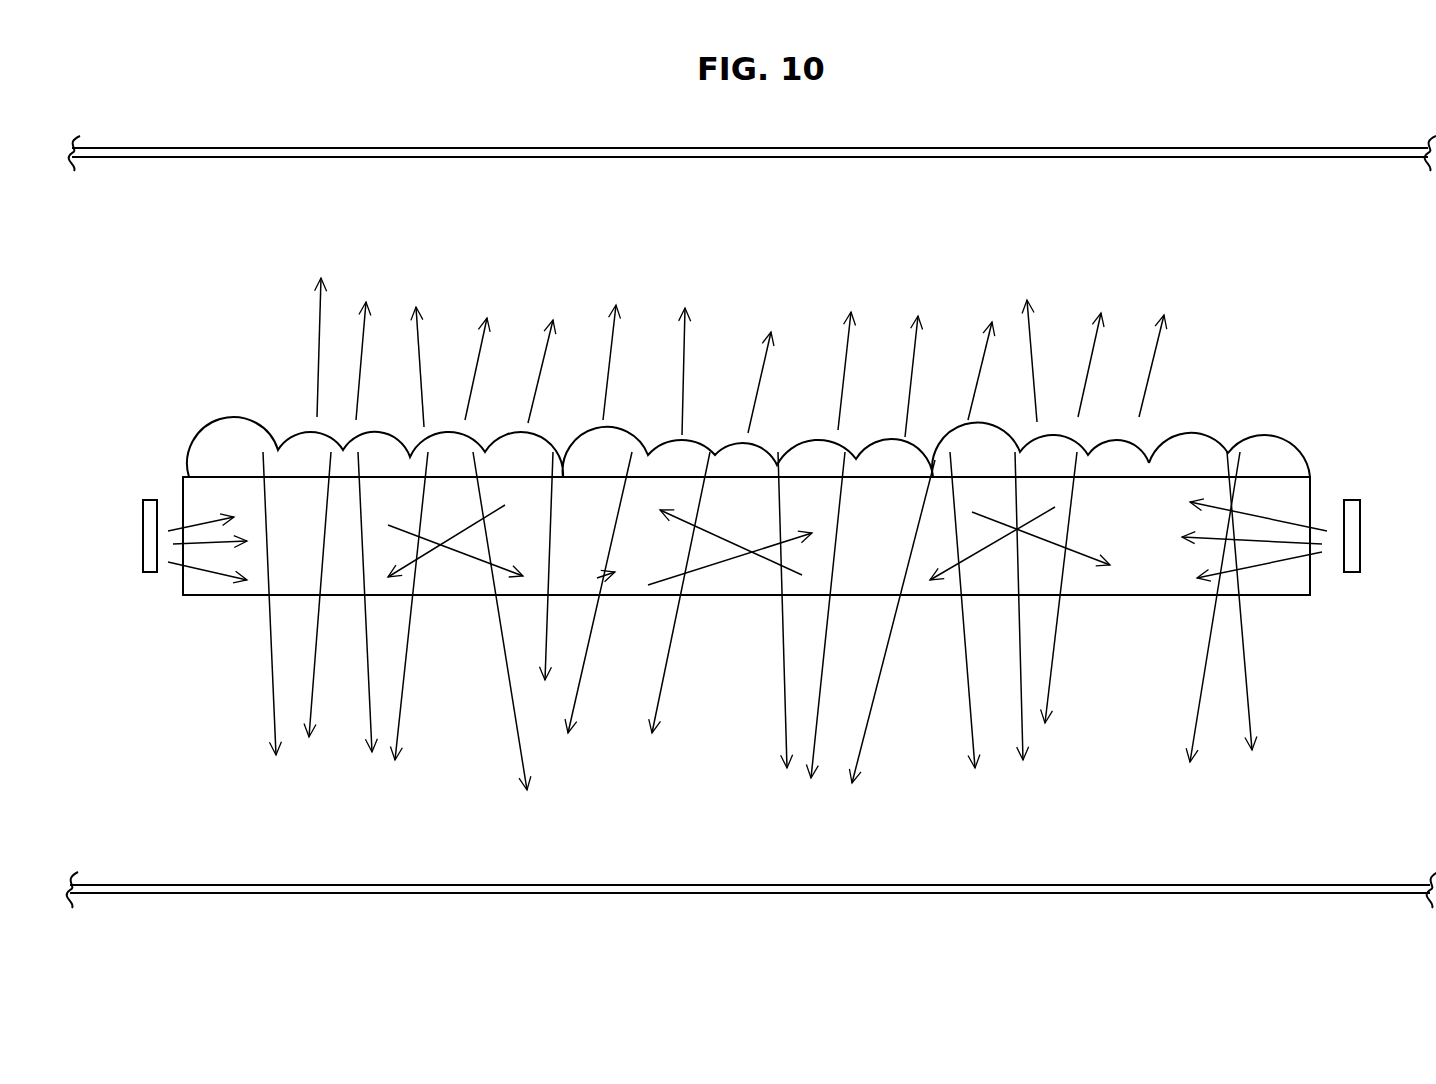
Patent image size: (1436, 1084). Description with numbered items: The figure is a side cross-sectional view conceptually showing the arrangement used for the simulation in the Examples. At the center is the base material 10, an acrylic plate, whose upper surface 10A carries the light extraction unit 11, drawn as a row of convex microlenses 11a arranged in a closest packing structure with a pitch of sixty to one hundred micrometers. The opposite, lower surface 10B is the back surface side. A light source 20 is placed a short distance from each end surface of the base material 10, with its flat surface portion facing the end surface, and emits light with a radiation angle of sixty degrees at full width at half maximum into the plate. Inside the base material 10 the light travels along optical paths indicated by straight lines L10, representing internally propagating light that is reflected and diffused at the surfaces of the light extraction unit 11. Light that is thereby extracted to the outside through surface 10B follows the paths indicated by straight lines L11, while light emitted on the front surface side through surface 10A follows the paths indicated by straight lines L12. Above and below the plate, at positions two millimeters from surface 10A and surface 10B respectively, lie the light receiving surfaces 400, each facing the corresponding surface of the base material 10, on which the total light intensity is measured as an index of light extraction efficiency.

The light receiving surface 400 is at (1079, 148).
The base material 10 is at (1302, 487).
The surface 10A is at (1275, 475).
The surface 10B is at (1283, 597).
The light extraction unit 11 is at (748, 387).
The convex microlens 11a is at (1190, 447).
The light source 20 is at (150, 575).
The straight line (optical path of internally propagating light) L10 is at (465, 553).
The straight line (optical path of extracted light) L11 is at (265, 488).
The straight line (optical path of light emitted on the front surface side) L12 is at (318, 318).